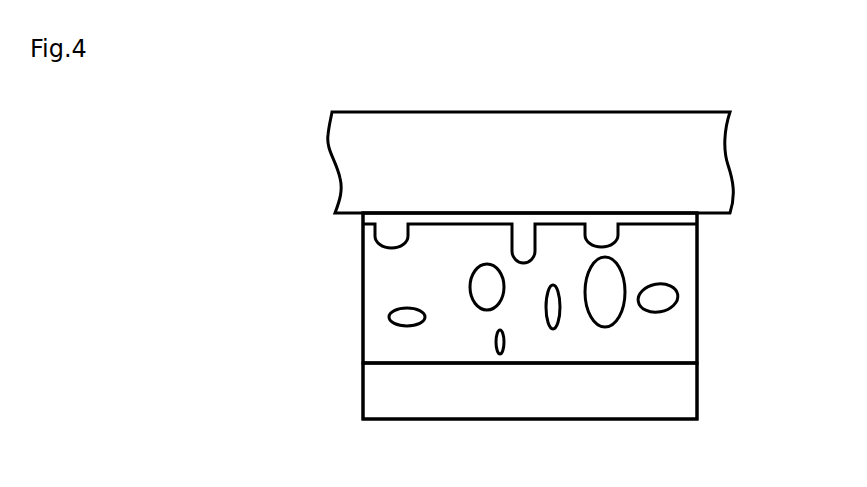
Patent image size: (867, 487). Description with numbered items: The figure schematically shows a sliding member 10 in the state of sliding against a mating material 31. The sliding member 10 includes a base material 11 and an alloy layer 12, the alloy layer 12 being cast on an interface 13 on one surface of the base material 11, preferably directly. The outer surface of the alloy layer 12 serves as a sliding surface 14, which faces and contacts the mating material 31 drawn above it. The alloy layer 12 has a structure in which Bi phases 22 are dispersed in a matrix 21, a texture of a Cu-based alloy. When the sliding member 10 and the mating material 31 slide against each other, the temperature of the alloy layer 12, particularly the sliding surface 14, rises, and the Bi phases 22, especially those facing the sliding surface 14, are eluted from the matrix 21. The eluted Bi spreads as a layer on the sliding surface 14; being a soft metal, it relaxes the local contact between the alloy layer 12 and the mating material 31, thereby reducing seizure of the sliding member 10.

The sliding member 10 is at (509, 329).
The base material 11 is at (363, 393).
The alloy layer 12 is at (363, 308).
The interface 13 is at (680, 361).
The sliding surface 14 is at (670, 223).
The matrix 21 is at (575, 342).
The Bi phases 22 is at (620, 231).
The mating material 31 is at (563, 112).